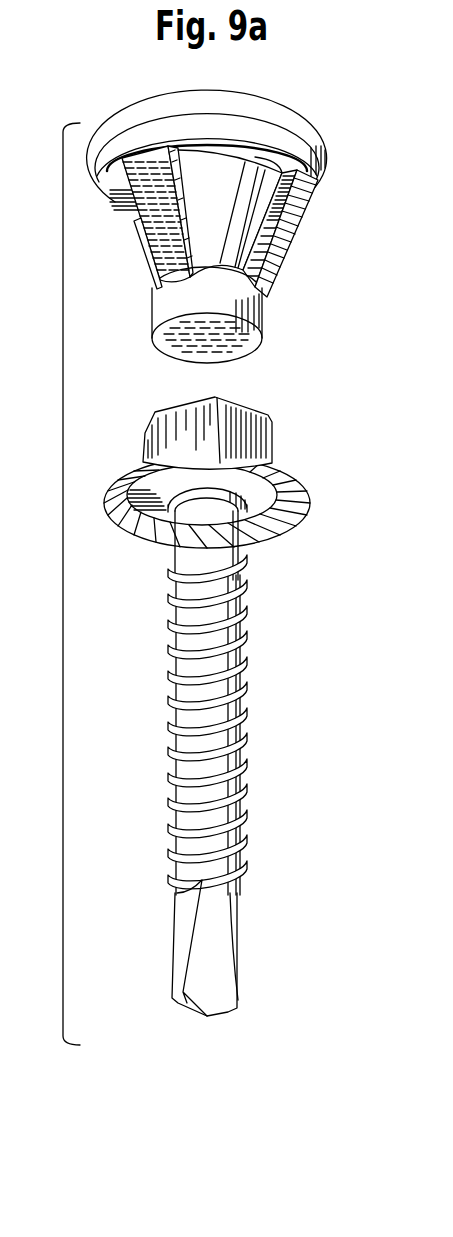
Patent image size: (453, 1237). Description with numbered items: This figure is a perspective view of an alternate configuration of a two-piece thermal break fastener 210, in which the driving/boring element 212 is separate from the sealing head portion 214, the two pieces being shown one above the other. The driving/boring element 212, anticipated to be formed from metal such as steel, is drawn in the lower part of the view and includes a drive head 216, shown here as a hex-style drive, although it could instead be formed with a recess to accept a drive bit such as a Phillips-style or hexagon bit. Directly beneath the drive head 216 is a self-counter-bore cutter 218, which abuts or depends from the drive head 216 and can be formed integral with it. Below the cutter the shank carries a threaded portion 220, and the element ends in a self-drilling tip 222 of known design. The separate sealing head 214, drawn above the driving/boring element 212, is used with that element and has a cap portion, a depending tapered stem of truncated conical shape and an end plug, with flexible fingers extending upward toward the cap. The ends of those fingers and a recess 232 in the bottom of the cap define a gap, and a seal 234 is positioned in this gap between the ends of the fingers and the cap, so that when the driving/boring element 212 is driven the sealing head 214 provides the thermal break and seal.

The two-piece thermal break fastener 210 is at (62, 583).
The driving/boring element 212 is at (219, 696).
The sealing head portion 214 is at (227, 226).
The drive head 216 is at (187, 412).
The self-counter-bore cutter 218 is at (292, 543).
The threaded portion 220 is at (247, 720).
The self-drilling tip 222 is at (233, 948).
The recess 232 is at (328, 171).
The seal 234 is at (118, 188).